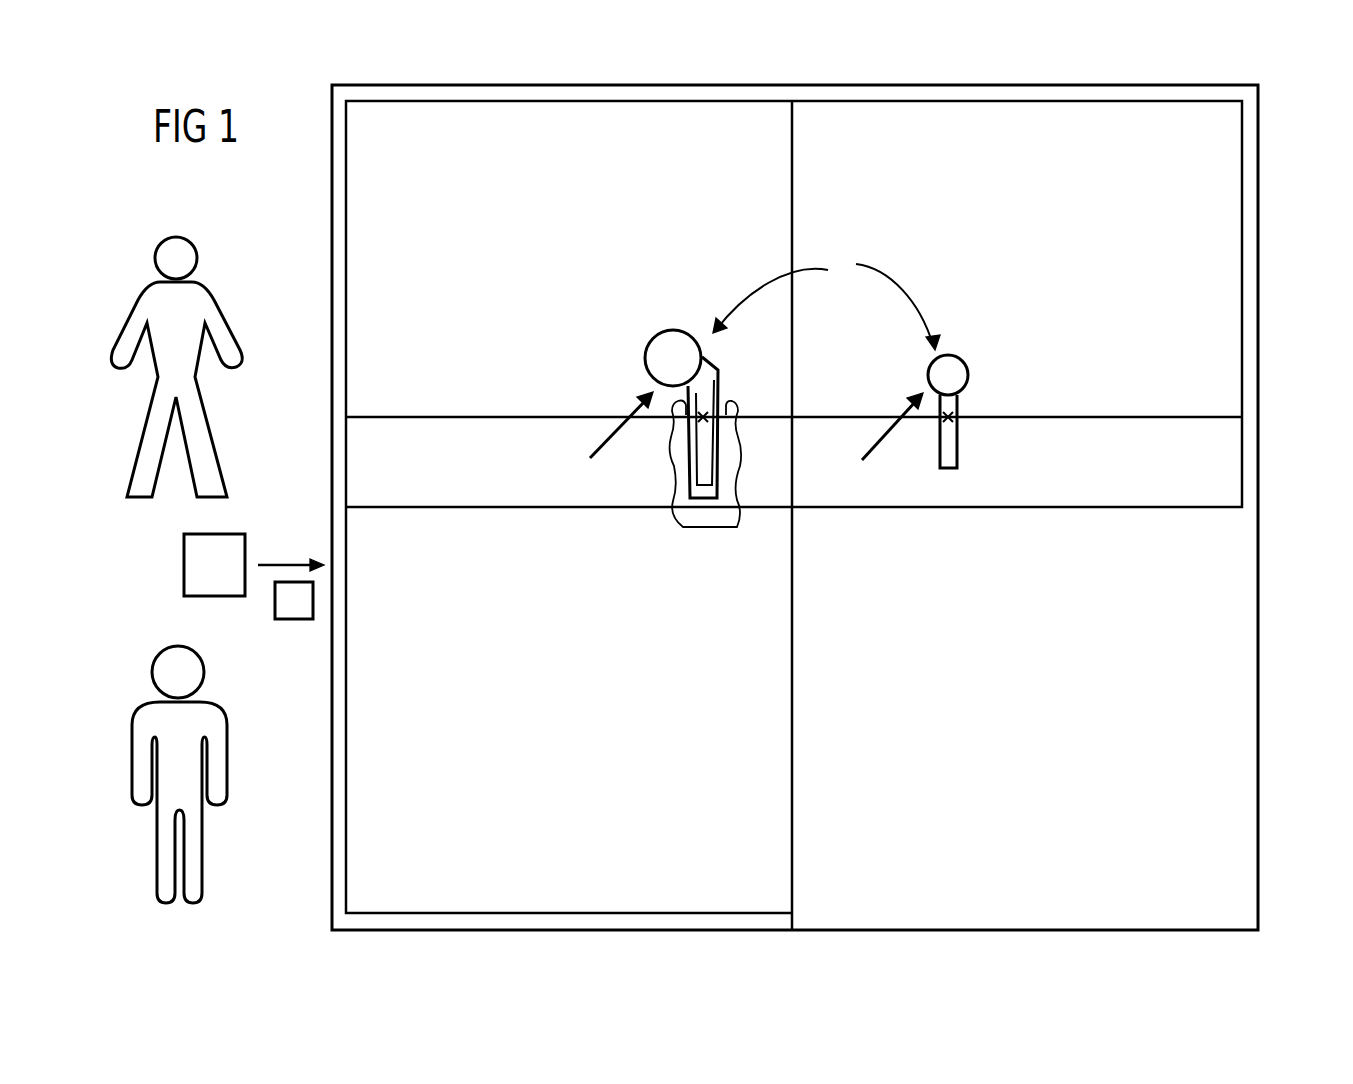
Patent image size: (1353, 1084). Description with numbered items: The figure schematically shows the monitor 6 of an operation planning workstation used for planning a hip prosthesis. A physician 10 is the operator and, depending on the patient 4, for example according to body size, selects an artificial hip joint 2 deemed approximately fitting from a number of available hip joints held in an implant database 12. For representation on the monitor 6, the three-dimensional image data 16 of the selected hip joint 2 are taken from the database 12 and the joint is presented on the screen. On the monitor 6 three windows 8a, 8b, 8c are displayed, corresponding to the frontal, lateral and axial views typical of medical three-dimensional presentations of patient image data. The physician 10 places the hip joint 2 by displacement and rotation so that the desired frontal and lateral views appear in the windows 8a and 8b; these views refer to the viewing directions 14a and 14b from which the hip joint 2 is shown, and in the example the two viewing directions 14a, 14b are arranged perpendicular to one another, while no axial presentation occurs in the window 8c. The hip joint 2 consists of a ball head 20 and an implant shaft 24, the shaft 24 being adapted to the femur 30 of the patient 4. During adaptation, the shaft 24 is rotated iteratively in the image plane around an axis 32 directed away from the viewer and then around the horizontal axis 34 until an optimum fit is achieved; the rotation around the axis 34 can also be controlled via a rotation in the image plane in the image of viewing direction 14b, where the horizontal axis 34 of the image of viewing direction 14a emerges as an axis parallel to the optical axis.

The artificial hip joint 2 is at (826, 299).
The patient 4 is at (148, 446).
The monitor 6 is at (1218, 783).
The frontal view window 8a is at (380, 218).
The lateral view window 8b is at (1215, 303).
The axial view window 8c is at (385, 782).
The physician 10 is at (165, 858).
The implant database 12 is at (184, 568).
The first viewing direction 14a is at (590, 452).
The second viewing direction 14b is at (862, 455).
The 3D image data of the hip joint 16 is at (295, 620).
The ball head 20 is at (667, 353).
The implant shaft 24 is at (703, 447).
The femur 30 is at (702, 517).
The axis directed away from the viewer 32 is at (708, 398).
The horizontal axis 34 is at (443, 417).